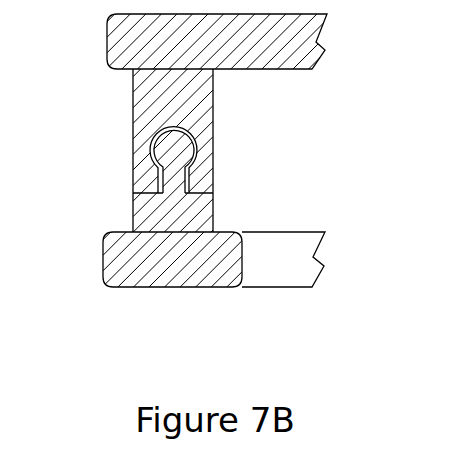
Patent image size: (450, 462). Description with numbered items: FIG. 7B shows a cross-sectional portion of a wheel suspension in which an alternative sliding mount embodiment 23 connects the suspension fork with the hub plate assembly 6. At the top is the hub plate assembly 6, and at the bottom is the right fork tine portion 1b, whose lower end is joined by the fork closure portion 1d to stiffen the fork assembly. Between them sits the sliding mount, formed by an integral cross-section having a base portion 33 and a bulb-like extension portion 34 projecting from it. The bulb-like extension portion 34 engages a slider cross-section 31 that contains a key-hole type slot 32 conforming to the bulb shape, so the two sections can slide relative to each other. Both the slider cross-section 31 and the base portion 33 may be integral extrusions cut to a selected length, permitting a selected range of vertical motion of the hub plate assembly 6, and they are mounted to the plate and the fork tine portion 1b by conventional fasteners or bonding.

The hub plate assembly 6 is at (167, 53).
The right fork tine portion 1b is at (162, 270).
The fork closure portion 1d is at (267, 270).
The sliding mount assembly embodiment 23 is at (219, 150).
The slider cross-section 31 is at (213, 100).
The key-hole type slot 32 is at (189, 175).
The base portion 33 is at (213, 212).
The bulb-like extension portion 34 is at (174, 150).